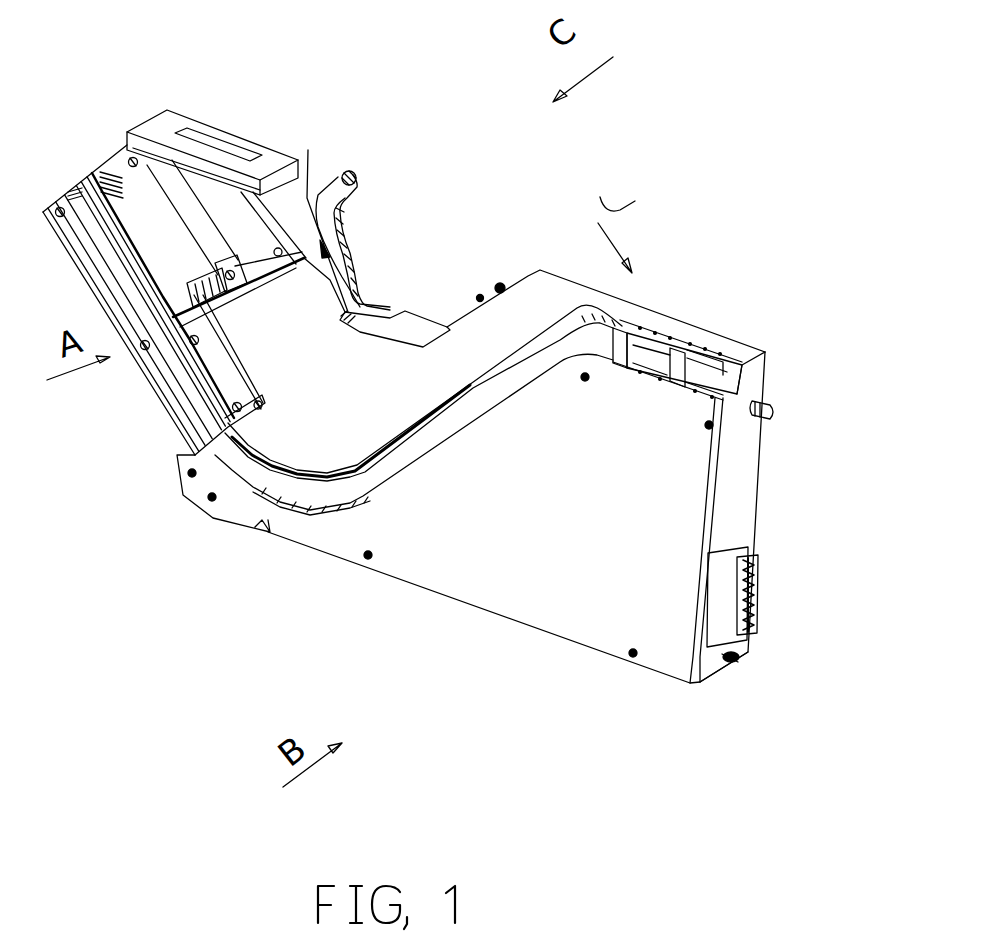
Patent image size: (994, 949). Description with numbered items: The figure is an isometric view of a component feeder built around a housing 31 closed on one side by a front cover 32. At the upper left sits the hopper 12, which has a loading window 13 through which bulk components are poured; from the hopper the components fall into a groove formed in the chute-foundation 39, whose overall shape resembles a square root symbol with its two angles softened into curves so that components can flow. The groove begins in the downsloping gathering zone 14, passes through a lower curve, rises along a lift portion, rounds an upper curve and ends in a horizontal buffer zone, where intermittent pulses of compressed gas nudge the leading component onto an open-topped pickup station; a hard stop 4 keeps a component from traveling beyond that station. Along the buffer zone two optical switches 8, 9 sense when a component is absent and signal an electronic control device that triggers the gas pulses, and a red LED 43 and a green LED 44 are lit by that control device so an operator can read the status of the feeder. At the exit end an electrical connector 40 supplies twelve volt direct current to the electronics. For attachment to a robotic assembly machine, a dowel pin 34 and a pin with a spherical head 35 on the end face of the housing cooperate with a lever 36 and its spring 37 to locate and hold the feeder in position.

The hard stop 4 is at (742, 334).
The rear optical switch 8 is at (648, 327).
The forward optical switch 9 is at (693, 345).
The hopper 12 is at (187, 213).
The loading window 13 is at (212, 140).
The gathering zone 14 is at (178, 425).
The housing 31 is at (303, 200).
The front cover 32 is at (515, 593).
The dowel pin 34 is at (768, 407).
The pin with spherical head 35 is at (740, 657).
The lever 36 is at (387, 313).
The spring 37 is at (352, 182).
The chute-foundation 39 is at (333, 497).
The electrical connector 40 is at (760, 557).
The red LED 43 is at (480, 294).
The green LED 44 is at (502, 284).